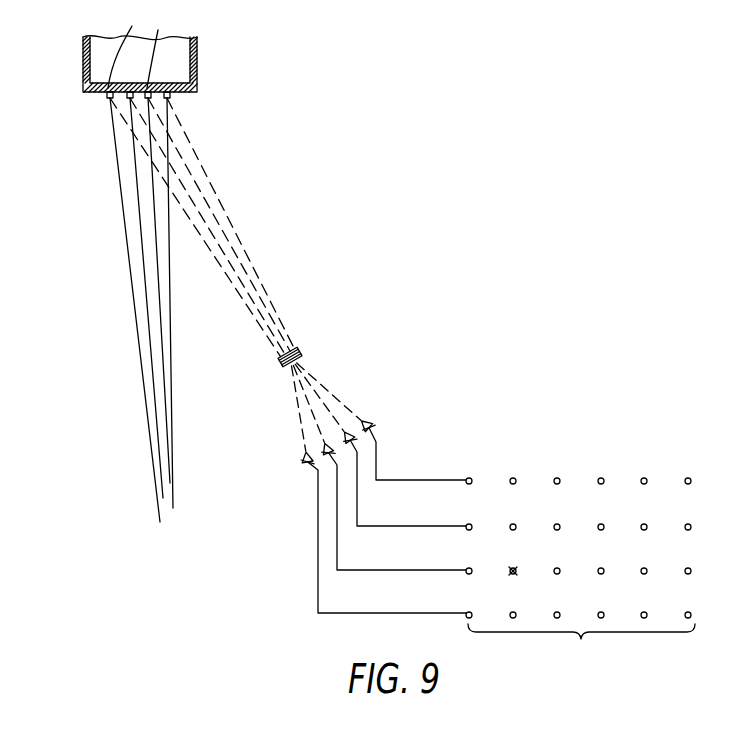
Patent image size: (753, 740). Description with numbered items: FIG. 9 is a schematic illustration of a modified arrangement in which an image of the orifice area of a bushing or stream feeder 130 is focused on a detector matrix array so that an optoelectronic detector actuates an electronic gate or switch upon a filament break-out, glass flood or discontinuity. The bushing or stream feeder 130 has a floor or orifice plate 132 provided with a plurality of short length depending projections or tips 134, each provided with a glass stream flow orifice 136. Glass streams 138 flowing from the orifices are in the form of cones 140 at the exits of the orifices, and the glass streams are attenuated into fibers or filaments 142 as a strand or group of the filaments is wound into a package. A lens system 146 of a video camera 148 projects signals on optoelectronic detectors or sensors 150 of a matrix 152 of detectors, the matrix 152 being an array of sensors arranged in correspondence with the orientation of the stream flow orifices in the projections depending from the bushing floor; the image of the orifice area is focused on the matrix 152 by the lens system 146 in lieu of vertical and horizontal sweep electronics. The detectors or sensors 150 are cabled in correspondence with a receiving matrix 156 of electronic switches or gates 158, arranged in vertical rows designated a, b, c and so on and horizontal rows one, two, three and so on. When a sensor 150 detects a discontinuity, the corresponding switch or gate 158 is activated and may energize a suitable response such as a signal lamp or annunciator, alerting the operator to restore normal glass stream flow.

The bushing or stream feeder 130 is at (197, 50).
The floor or orifice plate 132 is at (102, 92).
The depending projections or tips 134 is at (108, 98).
The glass stream flow orifice 136 is at (158, 30).
The glass streams 138 is at (120, 99).
The cones 140 is at (112, 99).
The fibers or filaments 142 is at (134, 307).
The lens system 146 is at (277, 364).
The video camera 148 is at (301, 345).
The optoelectronic detectors or sensors 150 is at (323, 447).
The matrix of detectors or sensors 152 is at (369, 412).
The receiving matrix of electronic switches 156 is at (569, 560).
The electronic switches or gates 158 is at (472, 483).